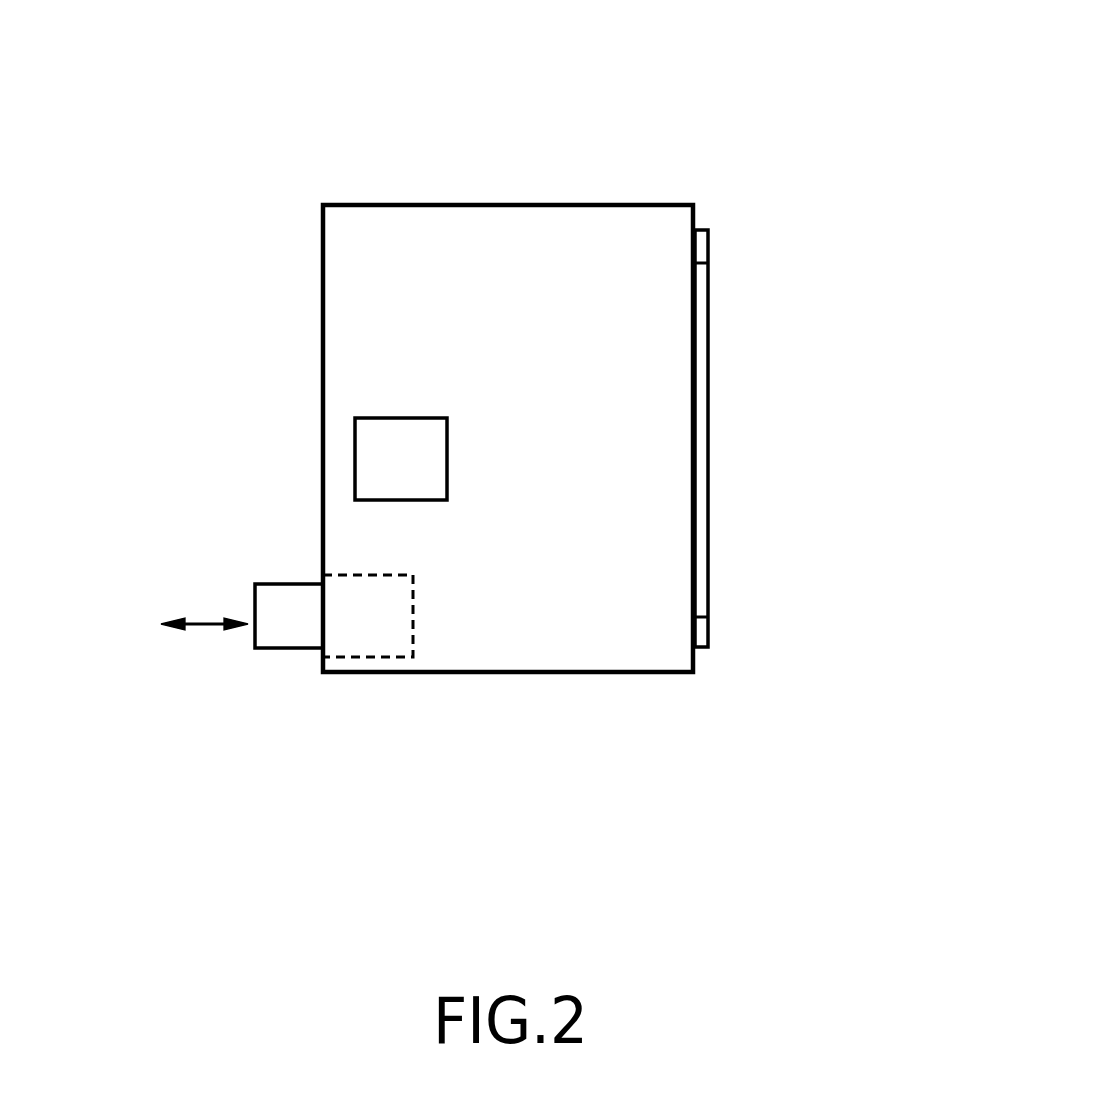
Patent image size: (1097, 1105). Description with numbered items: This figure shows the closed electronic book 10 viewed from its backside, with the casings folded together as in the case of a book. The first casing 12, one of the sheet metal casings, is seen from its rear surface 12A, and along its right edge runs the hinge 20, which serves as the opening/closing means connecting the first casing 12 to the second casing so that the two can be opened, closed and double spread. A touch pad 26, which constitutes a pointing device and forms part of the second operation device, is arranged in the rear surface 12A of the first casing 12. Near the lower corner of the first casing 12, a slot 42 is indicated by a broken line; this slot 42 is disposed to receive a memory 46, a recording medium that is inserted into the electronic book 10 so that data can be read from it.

The electronic book 10 is at (577, 159).
The first casing 12 is at (373, 206).
The rear surface 12A is at (347, 272).
The hinge 20 is at (709, 637).
The touch pad 26 is at (372, 468).
The slot 42 is at (390, 657).
The memory 46 is at (280, 640).